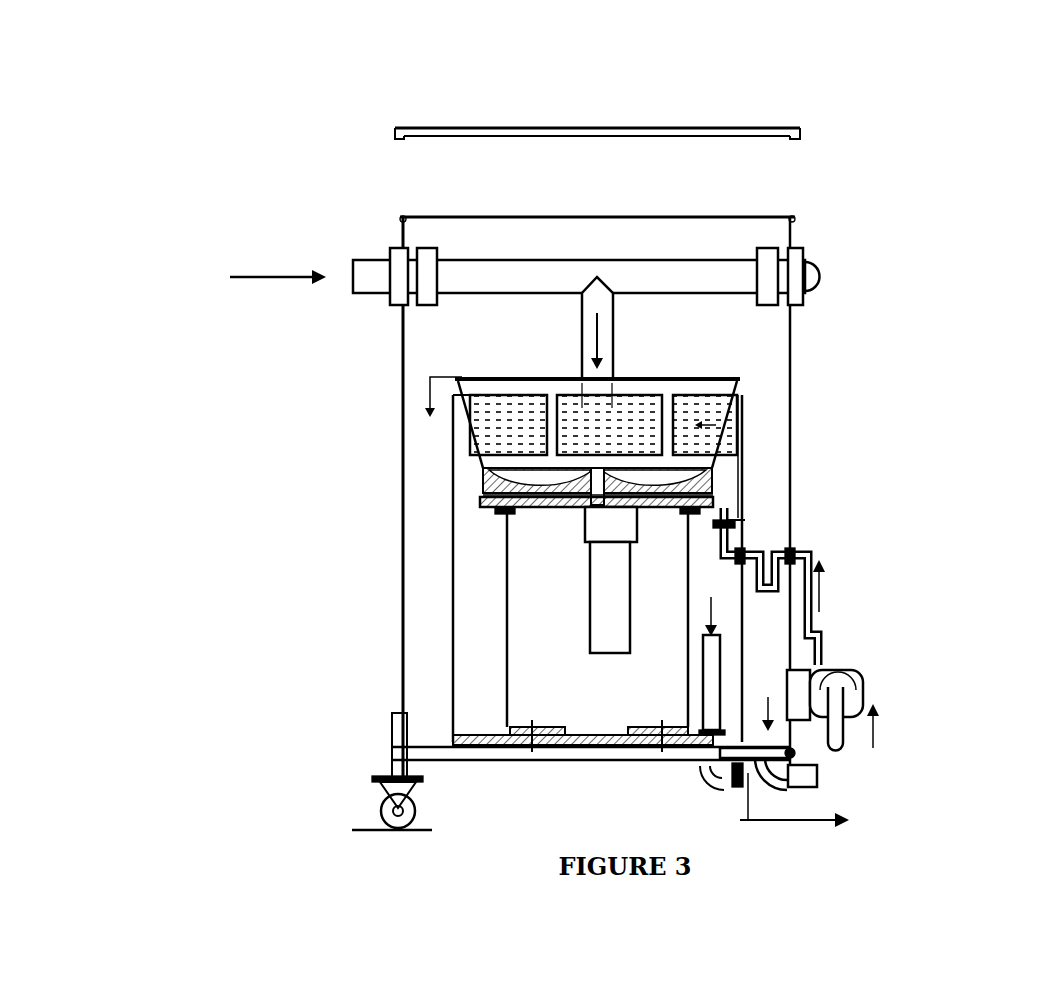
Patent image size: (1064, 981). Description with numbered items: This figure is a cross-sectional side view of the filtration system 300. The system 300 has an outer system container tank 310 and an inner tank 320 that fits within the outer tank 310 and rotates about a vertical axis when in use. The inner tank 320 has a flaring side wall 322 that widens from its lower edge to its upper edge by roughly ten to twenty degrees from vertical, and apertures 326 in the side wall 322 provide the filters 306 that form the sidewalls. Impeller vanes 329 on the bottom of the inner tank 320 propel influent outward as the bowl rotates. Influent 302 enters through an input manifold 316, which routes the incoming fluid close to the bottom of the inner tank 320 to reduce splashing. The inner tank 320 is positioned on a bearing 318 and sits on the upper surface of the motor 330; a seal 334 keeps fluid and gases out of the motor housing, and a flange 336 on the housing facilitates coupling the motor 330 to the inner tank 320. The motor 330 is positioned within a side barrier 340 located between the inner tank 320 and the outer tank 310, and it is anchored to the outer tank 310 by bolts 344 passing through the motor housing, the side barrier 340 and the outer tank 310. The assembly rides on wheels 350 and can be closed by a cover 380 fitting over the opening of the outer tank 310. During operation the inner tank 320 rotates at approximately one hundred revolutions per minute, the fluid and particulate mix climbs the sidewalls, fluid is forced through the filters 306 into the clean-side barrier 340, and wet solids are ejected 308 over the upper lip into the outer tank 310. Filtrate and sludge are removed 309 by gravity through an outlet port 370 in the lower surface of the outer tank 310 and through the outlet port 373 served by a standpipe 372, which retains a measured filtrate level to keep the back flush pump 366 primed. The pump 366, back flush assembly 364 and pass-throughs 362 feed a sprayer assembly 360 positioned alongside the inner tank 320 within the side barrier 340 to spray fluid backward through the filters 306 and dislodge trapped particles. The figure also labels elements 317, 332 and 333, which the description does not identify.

The system 300 is at (990, 86).
The influent 302 is at (242, 281).
The filters 306 is at (430, 393).
The ejected wet solids 308 is at (450, 413).
The removal of filtrate and wet solid sludge 309 is at (830, 774).
The outer system container tank 310 is at (458, 405).
The input manifold 316 is at (352, 262).
The support plate 317 is at (487, 510).
The bearing 318 is at (578, 752).
The inner tank 320 is at (558, 375).
The side wall 322 is at (745, 385).
The apertures 326 is at (747, 410).
The impeller vanes 329 is at (712, 425).
The motor 330 is at (598, 588).
The guide rod 332 is at (505, 555).
The screen 333 is at (490, 498).
The seal 334 is at (510, 727).
The flange 336 is at (505, 507).
The side barrier 340 is at (483, 470).
The bolts 344 is at (530, 723).
The wheels 350 is at (383, 800).
The sprayer assembly 360 is at (735, 478).
The pass-throughs 362 is at (745, 550).
The back flush assembly 364 is at (822, 640).
The back flush pump 366 is at (852, 683).
The outlet port 370 is at (722, 787).
The standpipe 372 is at (720, 635).
The outlet port 373 is at (818, 787).
The cover 380 is at (805, 135).